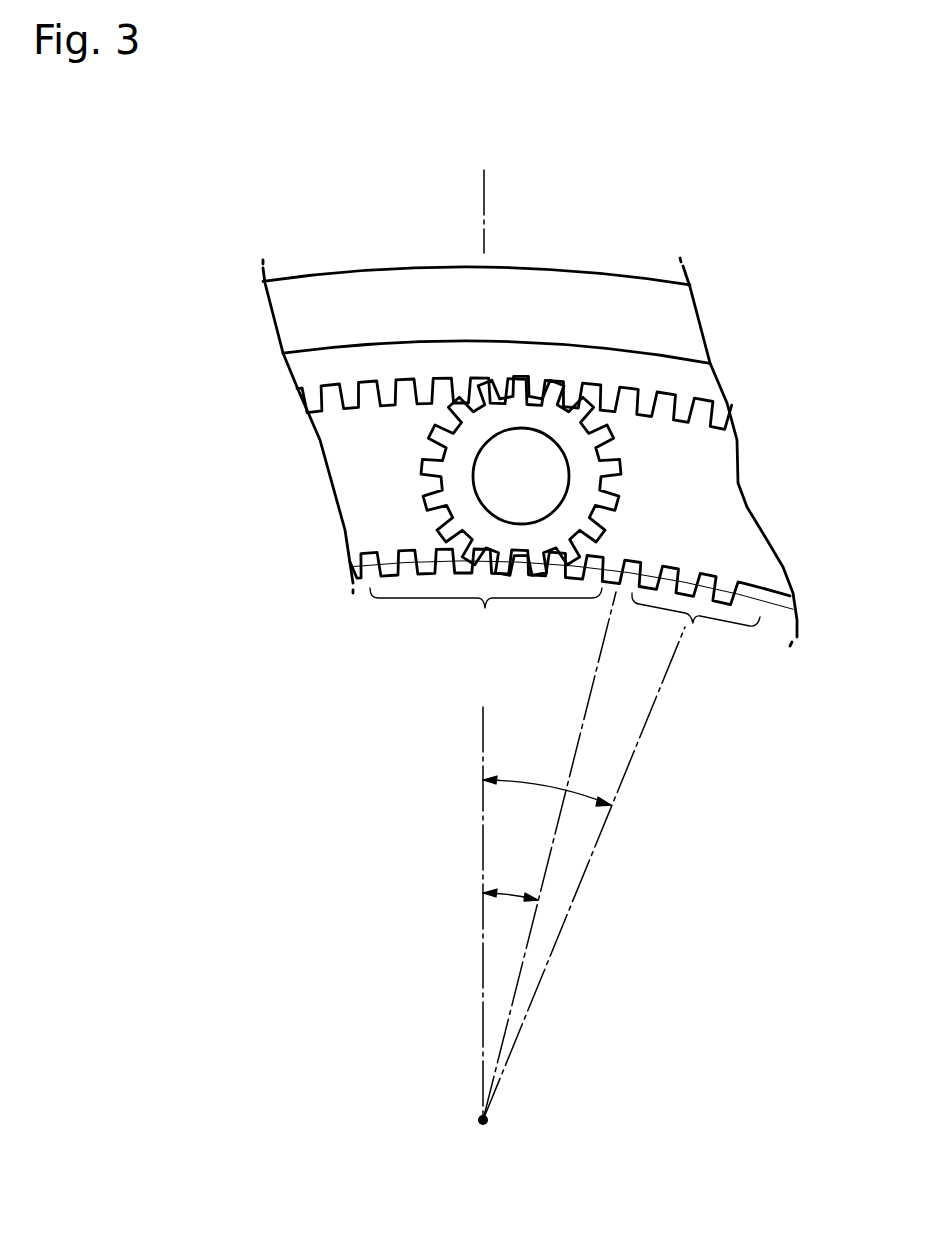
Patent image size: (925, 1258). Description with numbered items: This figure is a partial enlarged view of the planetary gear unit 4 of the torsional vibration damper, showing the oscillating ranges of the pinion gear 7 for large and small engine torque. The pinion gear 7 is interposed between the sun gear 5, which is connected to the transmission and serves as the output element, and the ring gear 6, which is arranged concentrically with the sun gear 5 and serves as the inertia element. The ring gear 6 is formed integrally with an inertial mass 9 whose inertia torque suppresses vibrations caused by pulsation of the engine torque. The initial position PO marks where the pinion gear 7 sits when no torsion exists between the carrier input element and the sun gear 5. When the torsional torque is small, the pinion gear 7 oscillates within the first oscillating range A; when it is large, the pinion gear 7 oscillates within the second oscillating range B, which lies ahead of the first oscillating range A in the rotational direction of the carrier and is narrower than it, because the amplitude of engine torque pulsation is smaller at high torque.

The planetary gear unit 4 is at (537, 182).
The sun gear 5 is at (717, 578).
The ring gear 6 is at (383, 370).
The pinion gear 7 is at (602, 450).
The inertial mass 9 is at (452, 282).
The first oscillating range A is at (486, 615).
The second oscillating range B is at (696, 625).
The initial position PO is at (467, 586).